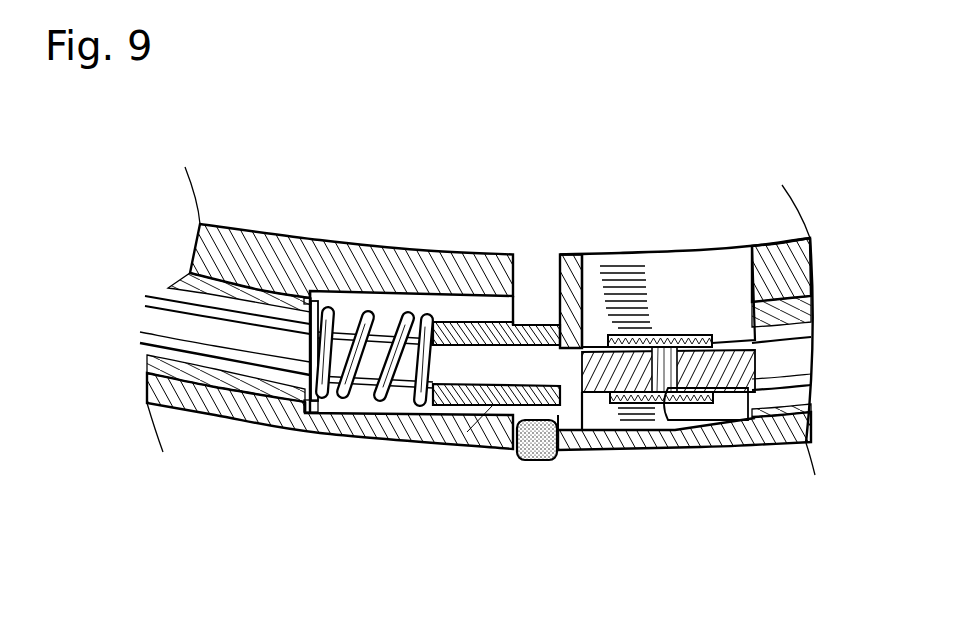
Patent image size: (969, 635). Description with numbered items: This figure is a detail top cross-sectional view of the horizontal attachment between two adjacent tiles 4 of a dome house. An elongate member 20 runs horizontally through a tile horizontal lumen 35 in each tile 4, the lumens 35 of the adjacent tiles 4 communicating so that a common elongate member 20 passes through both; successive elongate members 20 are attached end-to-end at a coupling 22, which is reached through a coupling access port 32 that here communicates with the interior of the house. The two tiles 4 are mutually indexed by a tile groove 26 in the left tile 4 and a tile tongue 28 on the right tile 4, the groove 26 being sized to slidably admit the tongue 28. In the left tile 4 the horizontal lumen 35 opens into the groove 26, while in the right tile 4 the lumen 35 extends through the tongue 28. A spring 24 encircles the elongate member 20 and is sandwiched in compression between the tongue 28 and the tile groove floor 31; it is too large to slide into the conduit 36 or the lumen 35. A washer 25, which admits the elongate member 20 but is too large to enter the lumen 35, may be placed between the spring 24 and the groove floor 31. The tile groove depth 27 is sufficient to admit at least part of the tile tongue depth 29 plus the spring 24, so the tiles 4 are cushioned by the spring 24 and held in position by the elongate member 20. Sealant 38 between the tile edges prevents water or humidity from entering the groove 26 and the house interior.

The tile 4 is at (227, 418).
The elongate member 20 is at (190, 410).
The coupling 22 is at (680, 430).
The spring 24 is at (382, 403).
The washer 25 is at (318, 410).
The tile groove 26 is at (458, 407).
The tile groove depth 27 is at (517, 254).
The tile tongue 28 is at (497, 430).
The tile tongue depth 29 is at (438, 243).
The tile groove floor 31 is at (293, 420).
The coupling access port 32 is at (685, 283).
The tile horizontal lumen 35 is at (238, 231).
The conduit 36 is at (183, 310).
The sealant 38 is at (540, 458).